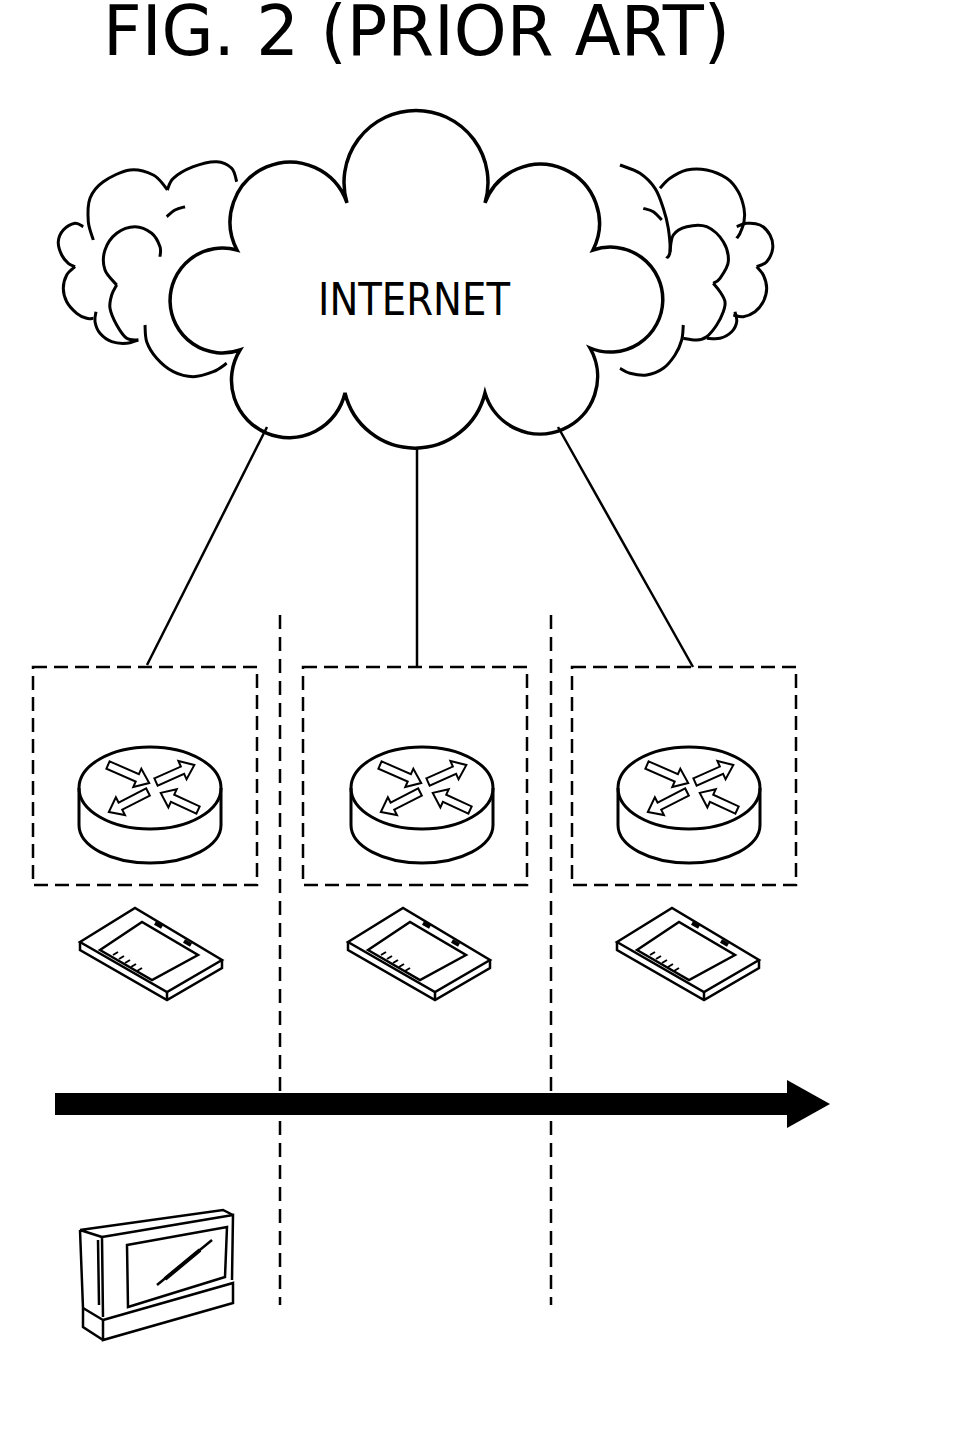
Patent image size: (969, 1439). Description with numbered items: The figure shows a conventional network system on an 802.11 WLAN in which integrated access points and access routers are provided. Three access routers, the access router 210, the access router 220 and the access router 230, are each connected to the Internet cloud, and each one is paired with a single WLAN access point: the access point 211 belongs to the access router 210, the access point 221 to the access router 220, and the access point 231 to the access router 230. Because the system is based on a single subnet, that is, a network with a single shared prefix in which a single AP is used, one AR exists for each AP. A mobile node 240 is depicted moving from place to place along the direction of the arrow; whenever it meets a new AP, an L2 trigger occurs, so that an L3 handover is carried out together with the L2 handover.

The access router 210 is at (145, 776).
The access router 220 is at (415, 776).
The access router 230 is at (684, 776).
The access point 211 is at (146, 983).
The access point 221 is at (416, 983).
The access point 231 is at (684, 983).
The mobile node 240 is at (156, 1244).